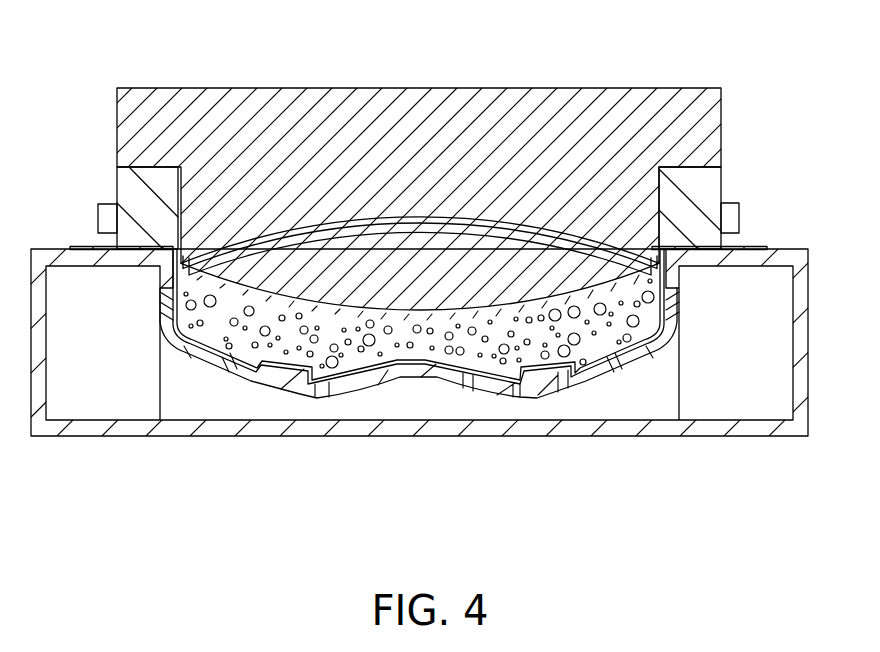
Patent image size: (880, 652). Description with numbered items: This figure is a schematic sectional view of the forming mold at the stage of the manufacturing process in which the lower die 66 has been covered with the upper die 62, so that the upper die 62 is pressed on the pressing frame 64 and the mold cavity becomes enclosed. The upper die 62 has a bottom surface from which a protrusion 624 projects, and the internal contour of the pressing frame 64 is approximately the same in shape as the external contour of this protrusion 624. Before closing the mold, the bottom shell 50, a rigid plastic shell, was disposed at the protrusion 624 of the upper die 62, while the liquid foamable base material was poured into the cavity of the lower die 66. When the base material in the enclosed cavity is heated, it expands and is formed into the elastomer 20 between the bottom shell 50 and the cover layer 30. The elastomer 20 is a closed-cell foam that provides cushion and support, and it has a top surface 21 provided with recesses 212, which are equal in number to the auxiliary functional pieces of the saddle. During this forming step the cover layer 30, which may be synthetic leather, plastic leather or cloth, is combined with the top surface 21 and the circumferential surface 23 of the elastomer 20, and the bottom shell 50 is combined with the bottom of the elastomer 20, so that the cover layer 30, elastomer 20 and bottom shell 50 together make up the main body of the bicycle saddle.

The elastomer 20 is at (435, 267).
The top surface 21 is at (485, 392).
The circumferential surface 23 is at (175, 293).
The cover layer 30 is at (765, 236).
The bottom shell 50 is at (520, 300).
The upper die 62 is at (357, 76).
The pressing frame 64 is at (133, 185).
The lower die 66 is at (78, 447).
The recesses 212 is at (285, 327).
The protrusion 624 is at (396, 287).